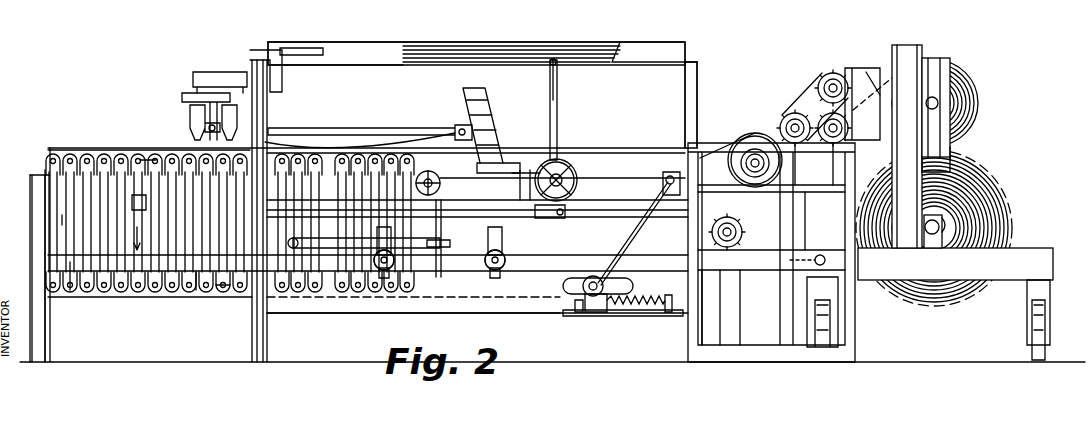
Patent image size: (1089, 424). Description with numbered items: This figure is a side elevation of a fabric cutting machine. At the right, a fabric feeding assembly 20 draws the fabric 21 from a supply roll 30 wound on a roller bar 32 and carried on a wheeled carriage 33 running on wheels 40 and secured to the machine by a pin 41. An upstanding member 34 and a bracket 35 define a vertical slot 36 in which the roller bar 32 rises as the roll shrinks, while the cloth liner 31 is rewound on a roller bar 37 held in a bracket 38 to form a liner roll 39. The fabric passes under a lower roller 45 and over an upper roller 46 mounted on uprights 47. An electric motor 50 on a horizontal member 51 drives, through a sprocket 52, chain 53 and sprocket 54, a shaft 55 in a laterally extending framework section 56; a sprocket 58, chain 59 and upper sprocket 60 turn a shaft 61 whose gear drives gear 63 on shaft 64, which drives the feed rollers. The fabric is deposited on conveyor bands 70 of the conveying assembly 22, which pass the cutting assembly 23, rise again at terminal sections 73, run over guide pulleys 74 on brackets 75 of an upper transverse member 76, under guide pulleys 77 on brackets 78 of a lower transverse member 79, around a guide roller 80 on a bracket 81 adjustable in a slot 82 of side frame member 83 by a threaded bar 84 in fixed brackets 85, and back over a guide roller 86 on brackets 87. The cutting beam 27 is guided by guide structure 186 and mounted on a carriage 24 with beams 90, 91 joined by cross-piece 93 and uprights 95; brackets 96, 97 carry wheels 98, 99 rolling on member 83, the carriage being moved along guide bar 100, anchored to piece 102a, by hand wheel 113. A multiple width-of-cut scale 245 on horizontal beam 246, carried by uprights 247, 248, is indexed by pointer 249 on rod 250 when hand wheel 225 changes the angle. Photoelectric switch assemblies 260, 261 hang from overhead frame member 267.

The fabric feeding assembly 20 is at (936, 47).
The fabric 21 is at (598, 148).
The conveying assembly 22 is at (258, 60).
The cutting assembly 23 is at (414, 113).
The cutting assembly carriage support 24 is at (515, 245).
The cutting beam 27 is at (330, 140).
The supply roll 30 is at (960, 95).
The cloth liner 31 is at (970, 180).
The roller bar 32 is at (938, 103).
The carriage 33 is at (1032, 244).
The upstanding member 34 is at (905, 50).
The bracket 35 is at (948, 62).
The vertical slot 36 is at (950, 147).
The roller bar 37 is at (937, 233).
The bracket 38 is at (948, 228).
The liner roll 39 is at (1025, 187).
The wheels 40 is at (1032, 345).
The pin 41 is at (790, 261).
The lower roller 45 is at (810, 95).
The upper roller 46 is at (833, 72).
The uprights 47 is at (862, 70).
The electric motor 50 is at (745, 250).
The horizontal member 51 is at (718, 263).
The sprocket 52 is at (713, 232).
The chain 53 is at (741, 160).
The sprocket 54 is at (757, 133).
The shaft 55 is at (718, 130).
The laterally extending section 56 is at (878, 338).
The sprocket 58 is at (805, 200).
The chain 59 is at (796, 113).
The upper sprocket 60 is at (820, 118).
The shaft 61 is at (805, 140).
The gear 63 is at (866, 72).
The shaft 64 is at (833, 143).
The conveyor bands 70 is at (62, 220).
The terminal sections of the conveyor bands 73 is at (148, 160).
The guide pulleys 74 is at (50, 150).
The brackets 75 is at (45, 175).
The upper transverse member 76 is at (45, 170).
The guide pulleys 77 is at (216, 290).
The brackets 78 is at (197, 278).
The lower transverse member 79 is at (75, 265).
The guide roller 80 is at (593, 278).
The bracket 81 is at (598, 308).
The longitudinal slot 82 is at (568, 290).
The lower horizontal side frame member 83 is at (402, 305).
The threaded bar 84 is at (640, 305).
The fixed brackets 85 is at (570, 316).
The guide roller 86 is at (645, 210).
The brackets 87 is at (672, 176).
The horizontal supporting beam 90 is at (335, 217).
The horizontal supporting beam 91 is at (560, 212).
The cross-piece 93 is at (527, 165).
The upright members 95 is at (438, 265).
The bracket 96 is at (378, 240).
The bracket 97 is at (493, 270).
The wheel 98 is at (390, 268).
The wheel 99 is at (505, 262).
The guide bar 100 is at (604, 200).
The downwardly extending piece 102a is at (138, 195).
The hand wheel 113 is at (560, 168).
The guide structure 186 is at (503, 93).
The hand wheel 225 is at (420, 170).
The multiple width-of-cut scale 245 is at (632, 52).
The horizontal beam 246 is at (372, 45).
The upright member 247 is at (270, 100).
The upright member 248 is at (690, 90).
The pointer 249 is at (556, 60).
The vertical rod 250 is at (557, 88).
The photoelectric switch assembly 260 is at (197, 72).
The photoelectric switch assembly 261 is at (190, 125).
The transverse overhead frame member 267 is at (212, 85).